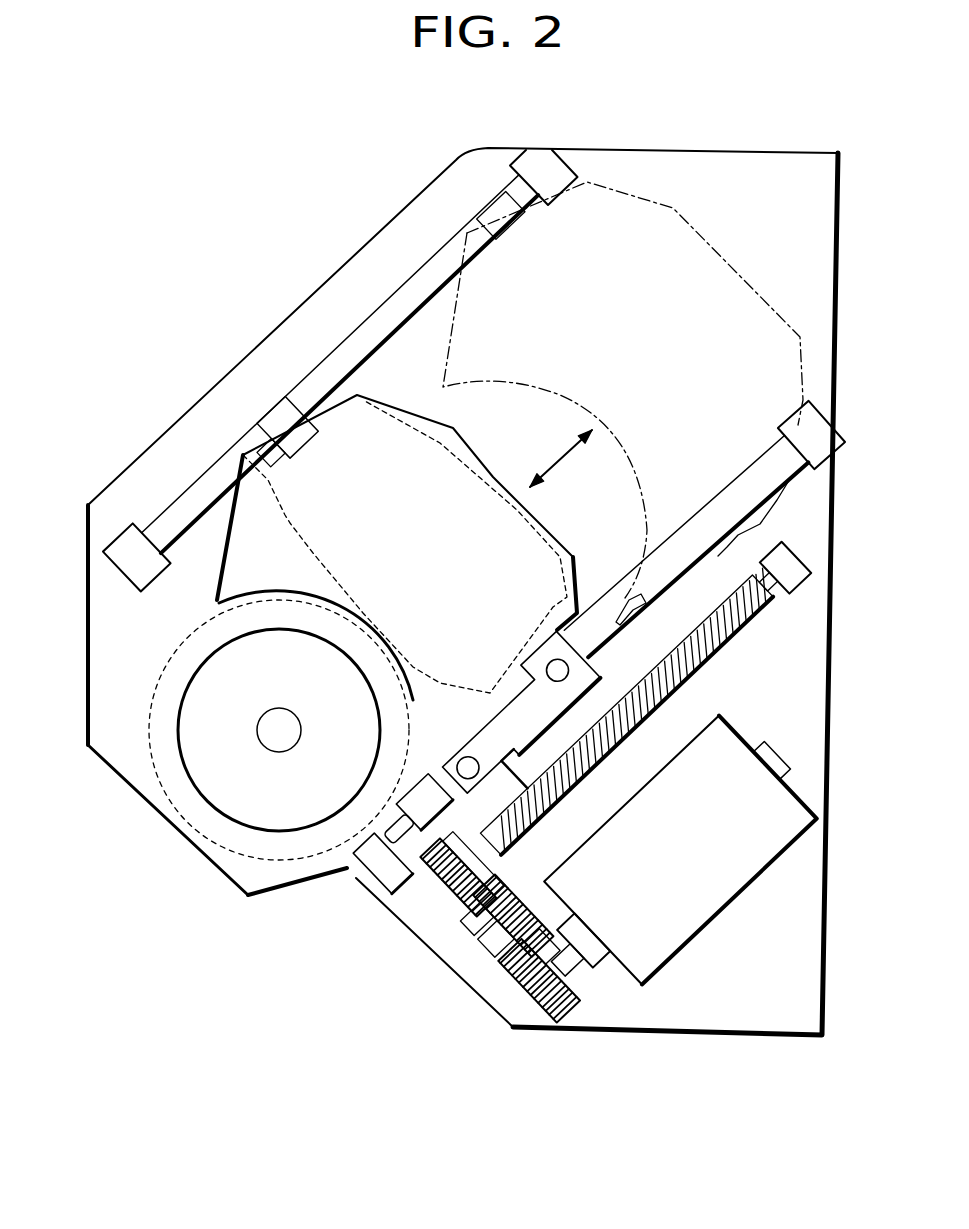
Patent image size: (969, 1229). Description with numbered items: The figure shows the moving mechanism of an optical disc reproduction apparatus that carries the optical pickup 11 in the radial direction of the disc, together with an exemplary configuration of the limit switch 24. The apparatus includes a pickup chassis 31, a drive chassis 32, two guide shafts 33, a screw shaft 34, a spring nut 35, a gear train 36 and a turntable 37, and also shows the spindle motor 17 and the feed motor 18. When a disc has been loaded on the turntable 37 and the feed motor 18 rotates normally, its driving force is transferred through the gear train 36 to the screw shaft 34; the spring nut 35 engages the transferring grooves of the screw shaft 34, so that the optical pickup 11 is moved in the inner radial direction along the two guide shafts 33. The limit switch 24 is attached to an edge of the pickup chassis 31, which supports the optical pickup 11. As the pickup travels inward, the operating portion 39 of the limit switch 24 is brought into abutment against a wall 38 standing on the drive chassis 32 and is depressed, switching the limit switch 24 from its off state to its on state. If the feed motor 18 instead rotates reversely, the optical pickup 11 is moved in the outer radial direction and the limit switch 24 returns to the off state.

The optical pickup 11 is at (290, 523).
The spindle motor 17 is at (207, 768).
The feed motor 18 is at (725, 872).
The limit switch 24 is at (427, 797).
The pickup chassis 31 is at (230, 583).
The drive chassis 32 is at (780, 993).
The guide shafts 33 is at (383, 322).
The screw shaft 34 is at (717, 653).
The spring nut 35 is at (530, 817).
The gear train 36 is at (487, 983).
The turntable 37 is at (148, 714).
The wall 38 is at (382, 870).
The operating portion 39 is at (392, 836).